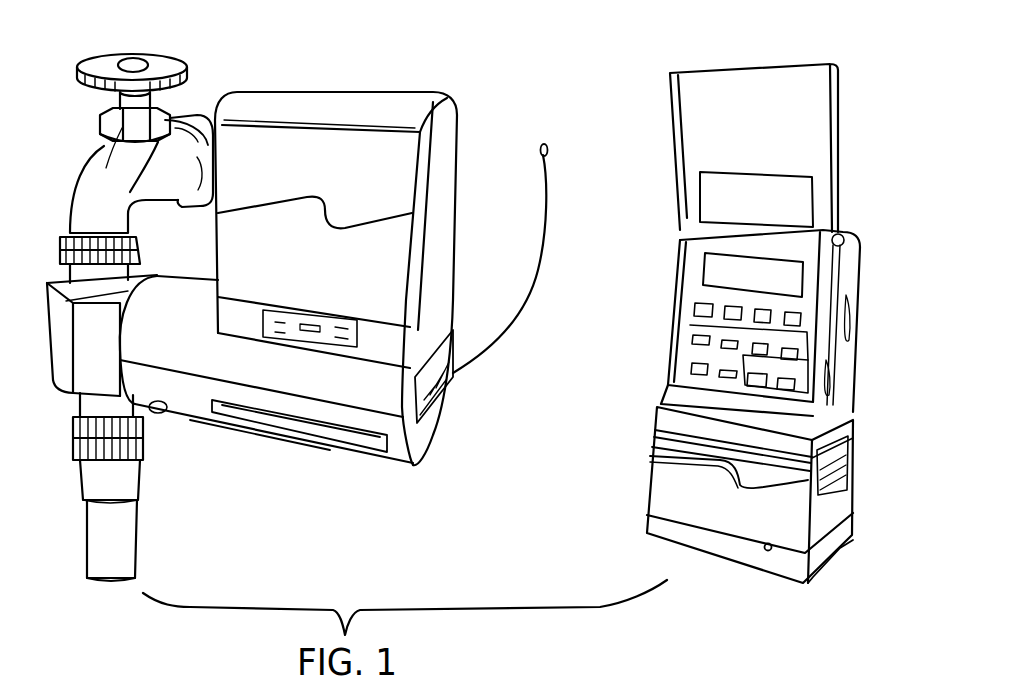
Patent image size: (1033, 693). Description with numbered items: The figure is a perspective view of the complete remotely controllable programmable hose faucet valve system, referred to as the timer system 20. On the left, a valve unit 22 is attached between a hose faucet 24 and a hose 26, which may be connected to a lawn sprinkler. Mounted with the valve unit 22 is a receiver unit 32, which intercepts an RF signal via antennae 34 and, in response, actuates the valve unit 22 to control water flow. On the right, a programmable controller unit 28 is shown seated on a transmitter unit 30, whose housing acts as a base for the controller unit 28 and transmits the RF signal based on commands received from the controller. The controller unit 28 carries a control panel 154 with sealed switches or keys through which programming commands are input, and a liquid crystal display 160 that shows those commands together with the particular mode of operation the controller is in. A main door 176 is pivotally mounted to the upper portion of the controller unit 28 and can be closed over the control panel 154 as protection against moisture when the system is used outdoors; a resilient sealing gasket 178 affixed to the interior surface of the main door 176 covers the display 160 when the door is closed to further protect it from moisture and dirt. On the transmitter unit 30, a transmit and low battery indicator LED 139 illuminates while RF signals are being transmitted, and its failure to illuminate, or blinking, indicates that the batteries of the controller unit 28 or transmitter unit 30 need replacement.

The timer system 20 is at (802, 53).
The valve unit 22 is at (444, 451).
The hose faucet 24 is at (88, 175).
The hose 26 is at (128, 540).
The programmable controller unit 28 is at (862, 355).
The transmitter unit 30 is at (865, 478).
The receiver unit 32 is at (477, 123).
The antennae 34 is at (543, 213).
The transmit and low battery indicator LED 139 is at (768, 552).
The control panel 154 is at (695, 327).
The liquid crystal display 160 is at (723, 270).
The main door 176 is at (835, 115).
The resilient sealing gasket 178 is at (723, 193).